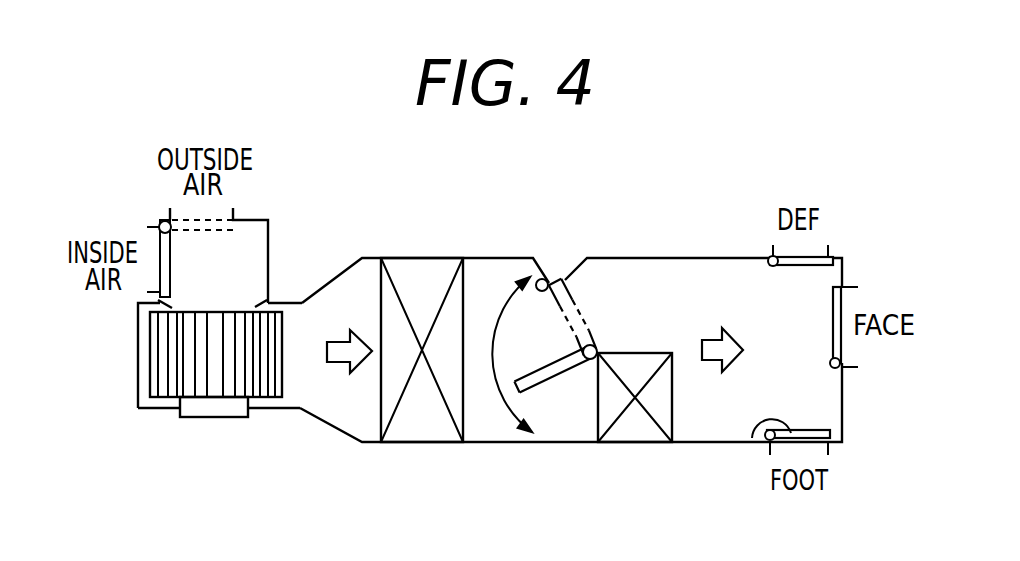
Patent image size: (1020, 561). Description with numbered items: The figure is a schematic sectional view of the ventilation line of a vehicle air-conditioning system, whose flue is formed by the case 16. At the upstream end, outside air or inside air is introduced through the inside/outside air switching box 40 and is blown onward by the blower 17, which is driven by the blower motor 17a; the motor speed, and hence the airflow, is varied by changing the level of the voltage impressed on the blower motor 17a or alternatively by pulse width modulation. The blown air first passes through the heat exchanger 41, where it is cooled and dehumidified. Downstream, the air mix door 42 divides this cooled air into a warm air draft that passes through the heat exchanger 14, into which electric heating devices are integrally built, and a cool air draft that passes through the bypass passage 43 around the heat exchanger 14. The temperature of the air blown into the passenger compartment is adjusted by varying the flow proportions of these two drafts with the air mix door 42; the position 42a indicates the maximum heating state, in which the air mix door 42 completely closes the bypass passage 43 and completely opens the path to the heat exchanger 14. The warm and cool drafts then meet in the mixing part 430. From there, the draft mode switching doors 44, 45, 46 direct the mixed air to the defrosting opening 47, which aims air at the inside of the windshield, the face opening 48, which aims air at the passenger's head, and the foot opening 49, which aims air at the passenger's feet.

The heat exchanger 14 is at (633, 432).
The case 16 is at (498, 258).
The blower 17 is at (158, 355).
The blower motor 17a is at (208, 407).
The inside/outside air switching box 40 is at (270, 245).
The heat exchanger 41 is at (415, 275).
The air mix door 42 is at (550, 372).
The maximum heating state 42a is at (538, 285).
The bypass passage 43 is at (645, 308).
The mixing part 430 is at (760, 347).
The draft mode switching door 44 is at (813, 260).
The draft mode switching door 45 is at (838, 305).
The draft mode switching door 46 is at (752, 440).
The defrosting opening 47 is at (782, 246).
The face opening 48 is at (852, 353).
The foot opening 49 is at (813, 452).